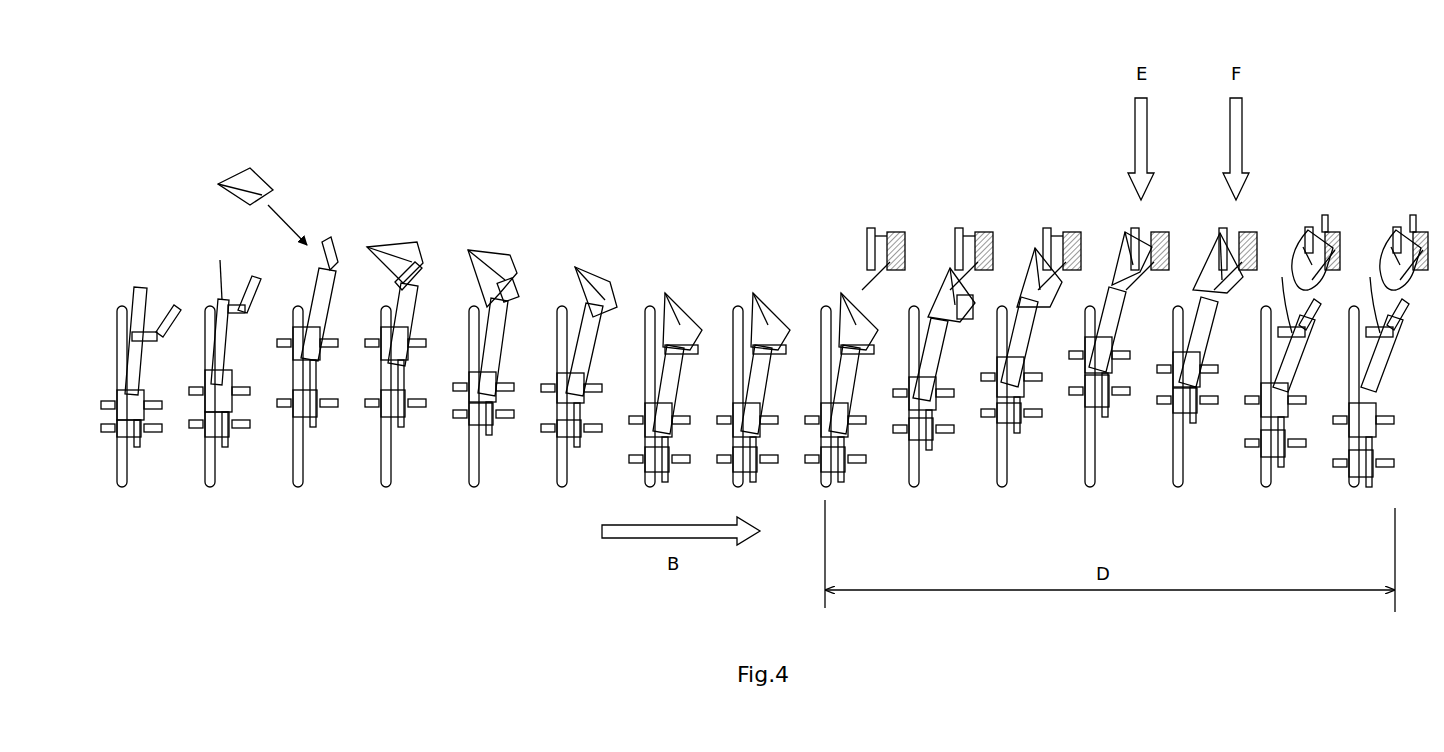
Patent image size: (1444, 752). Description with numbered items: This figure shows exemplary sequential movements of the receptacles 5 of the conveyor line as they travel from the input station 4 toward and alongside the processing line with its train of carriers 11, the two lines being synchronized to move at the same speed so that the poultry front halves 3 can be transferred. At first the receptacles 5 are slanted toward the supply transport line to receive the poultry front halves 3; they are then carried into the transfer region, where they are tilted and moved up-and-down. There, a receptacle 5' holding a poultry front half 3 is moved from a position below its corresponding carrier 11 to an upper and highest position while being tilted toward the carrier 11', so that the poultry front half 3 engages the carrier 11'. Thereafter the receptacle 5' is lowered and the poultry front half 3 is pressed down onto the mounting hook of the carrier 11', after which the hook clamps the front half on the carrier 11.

The poultry front half 3 is at (250, 163).
The input station 4 is at (344, 530).
The receptacle 5 is at (246, 336).
The receptacle 5' is at (1055, 300).
The carrier 11 is at (960, 191).
The carrier 11' is at (1277, 197).